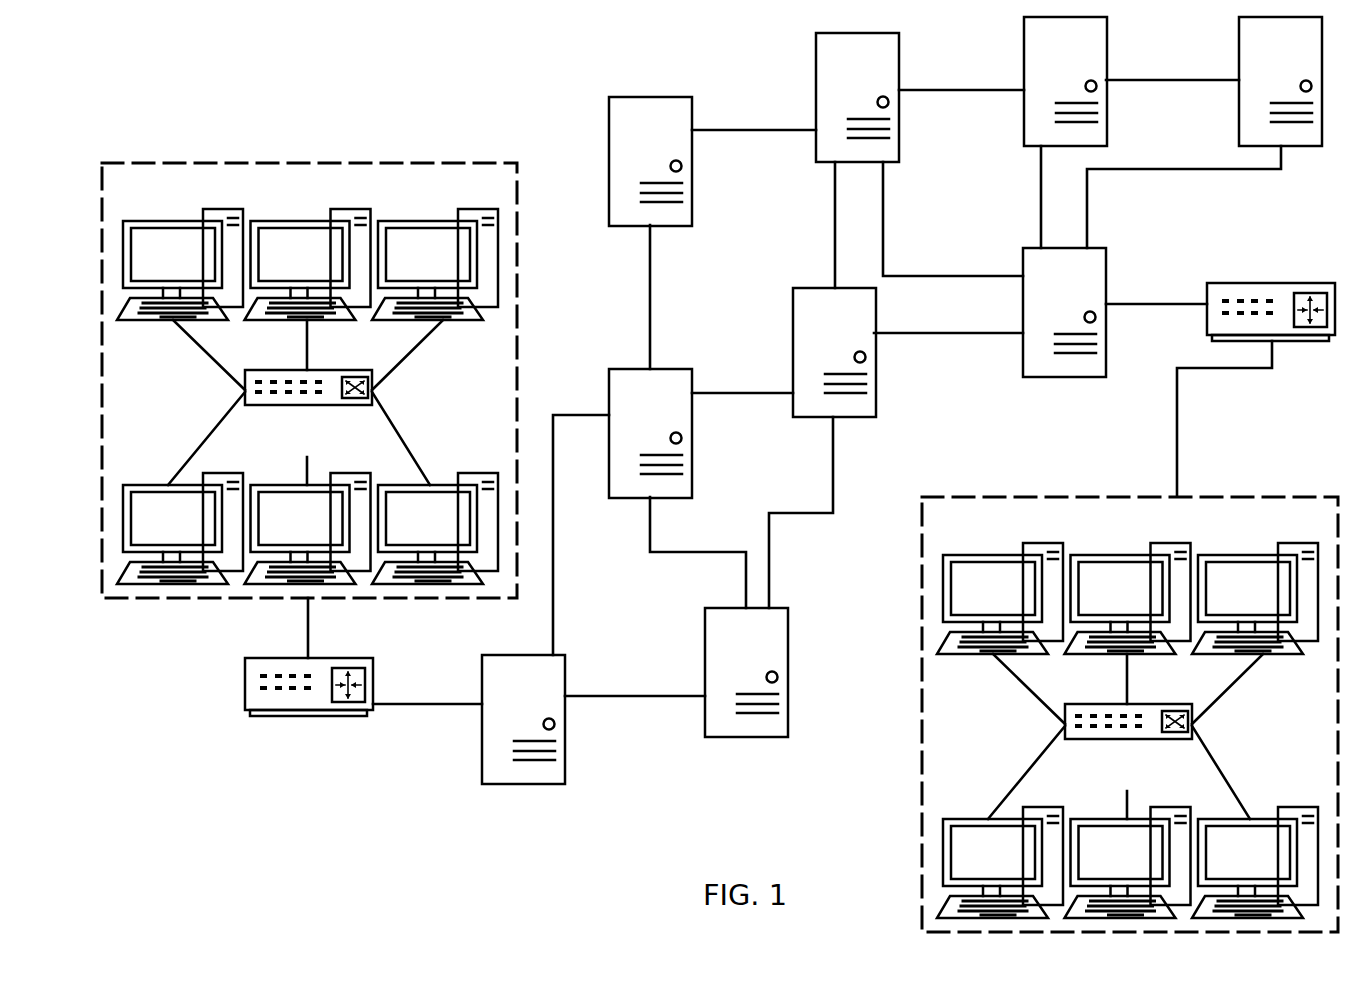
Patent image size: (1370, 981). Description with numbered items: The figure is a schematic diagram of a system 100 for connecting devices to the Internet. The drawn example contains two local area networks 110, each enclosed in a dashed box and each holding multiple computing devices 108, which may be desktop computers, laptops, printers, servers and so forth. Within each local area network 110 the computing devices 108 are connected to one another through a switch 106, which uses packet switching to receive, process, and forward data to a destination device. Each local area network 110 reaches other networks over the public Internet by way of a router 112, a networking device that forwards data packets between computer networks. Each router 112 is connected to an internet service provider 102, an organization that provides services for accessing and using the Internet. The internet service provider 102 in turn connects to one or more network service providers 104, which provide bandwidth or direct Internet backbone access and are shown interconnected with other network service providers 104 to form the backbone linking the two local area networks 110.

The system 100 is at (327, 96).
The internet service provider 102 is at (794, 544).
The network service provider 104 is at (965, 405).
The switch 106 is at (718, 573).
The computing device 108 is at (717, 563).
The local area network 110 is at (720, 547).
The router 112 is at (790, 545).